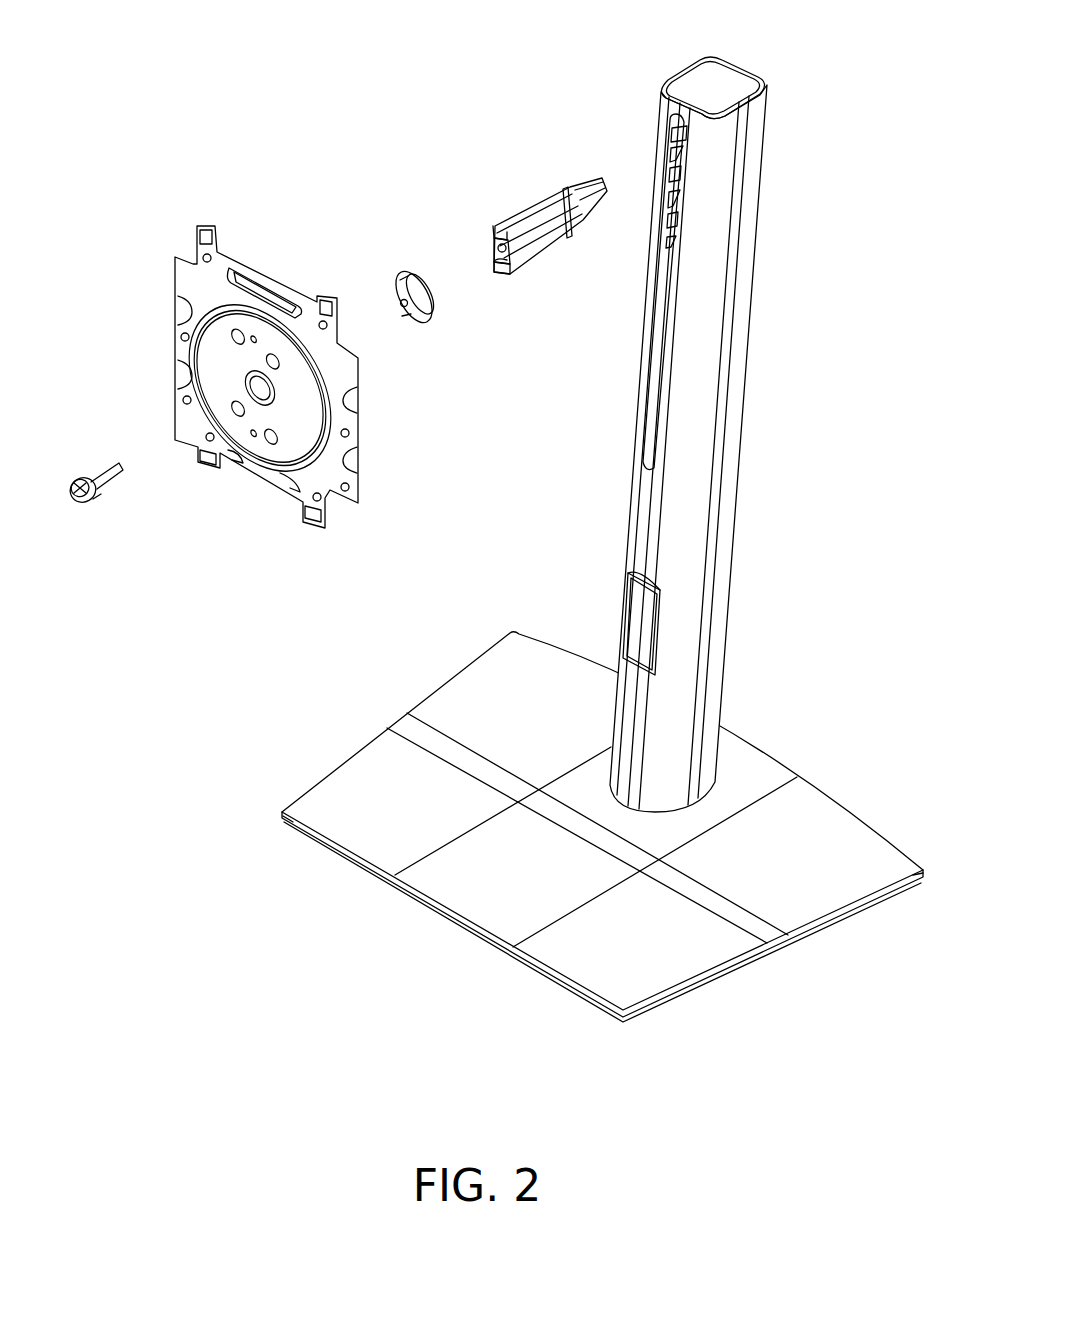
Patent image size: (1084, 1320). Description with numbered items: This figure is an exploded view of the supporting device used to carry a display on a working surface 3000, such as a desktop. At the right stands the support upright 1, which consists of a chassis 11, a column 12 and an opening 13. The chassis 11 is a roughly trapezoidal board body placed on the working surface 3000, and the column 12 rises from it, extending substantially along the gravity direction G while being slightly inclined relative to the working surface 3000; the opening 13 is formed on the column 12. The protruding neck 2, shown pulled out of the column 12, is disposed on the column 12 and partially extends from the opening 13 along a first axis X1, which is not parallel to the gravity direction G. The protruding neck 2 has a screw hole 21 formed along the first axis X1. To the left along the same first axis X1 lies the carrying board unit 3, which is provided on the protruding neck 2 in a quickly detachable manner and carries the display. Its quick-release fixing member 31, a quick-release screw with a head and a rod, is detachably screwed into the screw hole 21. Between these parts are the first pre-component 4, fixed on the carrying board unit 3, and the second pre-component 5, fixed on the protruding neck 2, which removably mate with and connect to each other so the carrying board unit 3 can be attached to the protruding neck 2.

The support upright 1 is at (602, 539).
The chassis 11 is at (812, 807).
The column 12 is at (738, 455).
The opening 13 is at (768, 187).
The protruding neck 2 is at (550, 235).
The screw hole 21 is at (515, 268).
The carrying board unit 3 is at (239, 231).
The quick-release fixing member 31 is at (105, 481).
The first pre-component 4 is at (407, 248).
The second pre-component 5 is at (510, 282).
The first axis X1 is at (117, 463).
The gravity direction G is at (603, 568).
The working surface 3000 is at (258, 941).